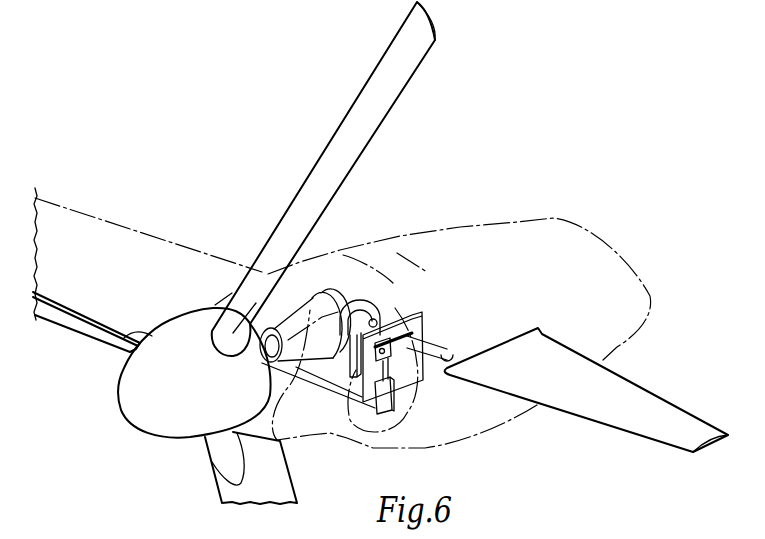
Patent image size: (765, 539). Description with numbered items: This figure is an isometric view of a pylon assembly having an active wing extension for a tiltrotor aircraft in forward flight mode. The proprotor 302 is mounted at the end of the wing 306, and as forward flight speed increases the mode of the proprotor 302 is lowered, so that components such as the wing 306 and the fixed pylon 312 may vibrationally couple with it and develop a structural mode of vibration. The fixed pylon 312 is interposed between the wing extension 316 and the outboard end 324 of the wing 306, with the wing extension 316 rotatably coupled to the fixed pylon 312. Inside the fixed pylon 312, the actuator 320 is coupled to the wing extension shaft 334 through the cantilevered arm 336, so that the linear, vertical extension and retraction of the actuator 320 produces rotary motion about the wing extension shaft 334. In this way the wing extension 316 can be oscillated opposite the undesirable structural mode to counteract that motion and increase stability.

The proprotor 302 is at (140, 405).
The wing 306 is at (120, 246).
The fixed pylon 312 is at (518, 227).
The wing extension 316 is at (652, 403).
The actuator 320 is at (397, 411).
The outboard end 324 is at (214, 303).
The wing extension shaft 334 is at (438, 342).
The cantilevered arm 336 is at (402, 340).